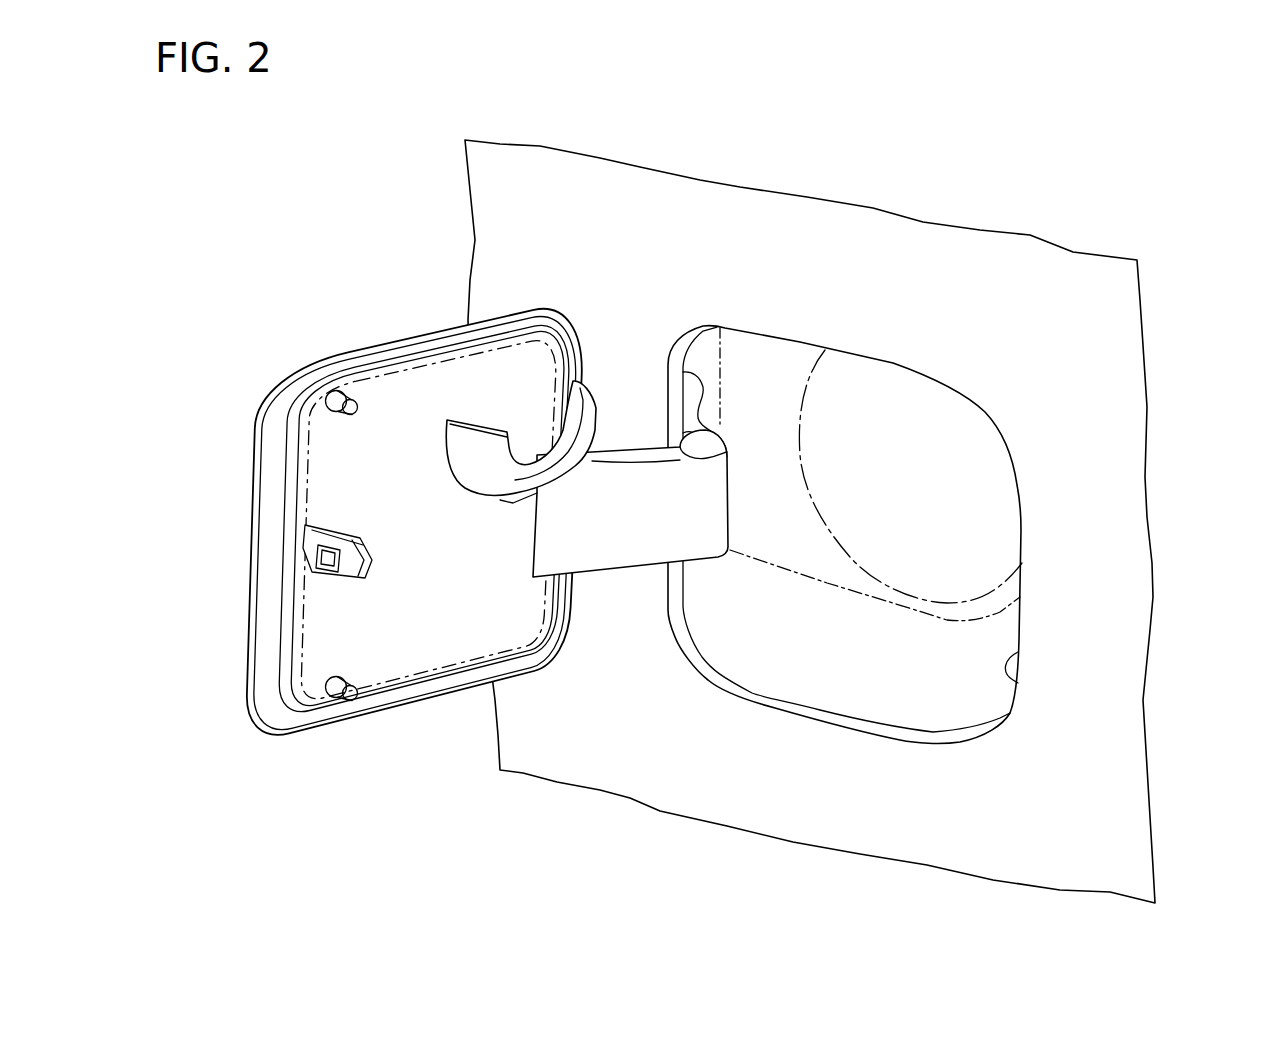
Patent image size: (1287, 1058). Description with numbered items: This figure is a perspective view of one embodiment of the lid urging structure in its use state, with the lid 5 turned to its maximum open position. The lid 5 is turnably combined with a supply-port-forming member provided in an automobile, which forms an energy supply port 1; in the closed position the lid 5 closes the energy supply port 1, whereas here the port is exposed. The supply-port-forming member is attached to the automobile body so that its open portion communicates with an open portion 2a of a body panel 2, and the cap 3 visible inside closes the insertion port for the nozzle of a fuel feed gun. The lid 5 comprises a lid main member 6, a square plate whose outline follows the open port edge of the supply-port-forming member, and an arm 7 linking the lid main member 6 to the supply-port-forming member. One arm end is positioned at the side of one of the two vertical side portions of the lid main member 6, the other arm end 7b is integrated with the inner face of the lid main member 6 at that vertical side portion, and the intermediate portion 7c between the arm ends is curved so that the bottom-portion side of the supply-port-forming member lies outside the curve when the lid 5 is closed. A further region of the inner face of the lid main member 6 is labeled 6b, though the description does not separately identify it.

The energy supply port 1 is at (895, 373).
The body panel 2 is at (1097, 560).
The open portion 2a is at (1020, 687).
The cap 3 is at (995, 490).
The lid 5 is at (410, 354).
The lid main member 6 is at (352, 352).
The lid inner surface 6b is at (327, 458).
The arm 7 is at (610, 550).
The other arm end 7b is at (530, 558).
The intermediate portion 7c is at (707, 543).